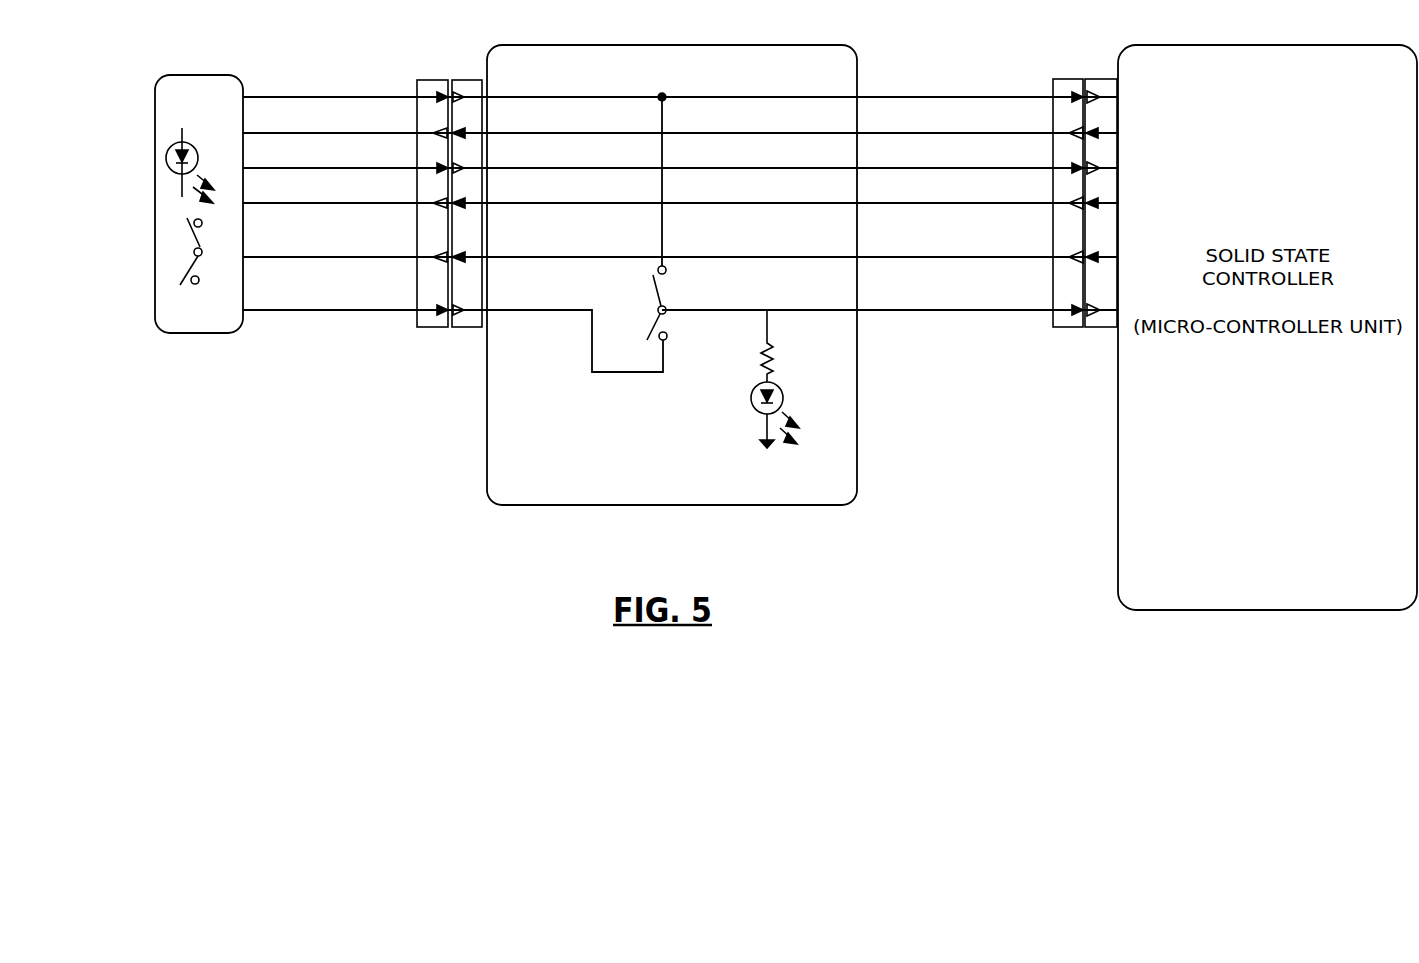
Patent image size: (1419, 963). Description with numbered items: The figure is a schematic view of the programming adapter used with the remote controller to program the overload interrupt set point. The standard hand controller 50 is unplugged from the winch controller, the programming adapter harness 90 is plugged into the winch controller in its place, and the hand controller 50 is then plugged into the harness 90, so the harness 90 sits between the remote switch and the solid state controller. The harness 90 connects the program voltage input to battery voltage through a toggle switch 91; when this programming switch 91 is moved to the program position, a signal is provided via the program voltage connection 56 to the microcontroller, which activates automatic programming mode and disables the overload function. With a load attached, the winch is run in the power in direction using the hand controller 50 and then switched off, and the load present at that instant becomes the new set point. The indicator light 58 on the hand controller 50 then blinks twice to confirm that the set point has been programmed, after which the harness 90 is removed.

The hand controller 50 is at (200, 75).
The indicator light 58 is at (166, 158).
The programming adapter harness 90 is at (668, 45).
The toggle switch 91 is at (667, 292).
The program voltage connection 56 is at (1012, 312).